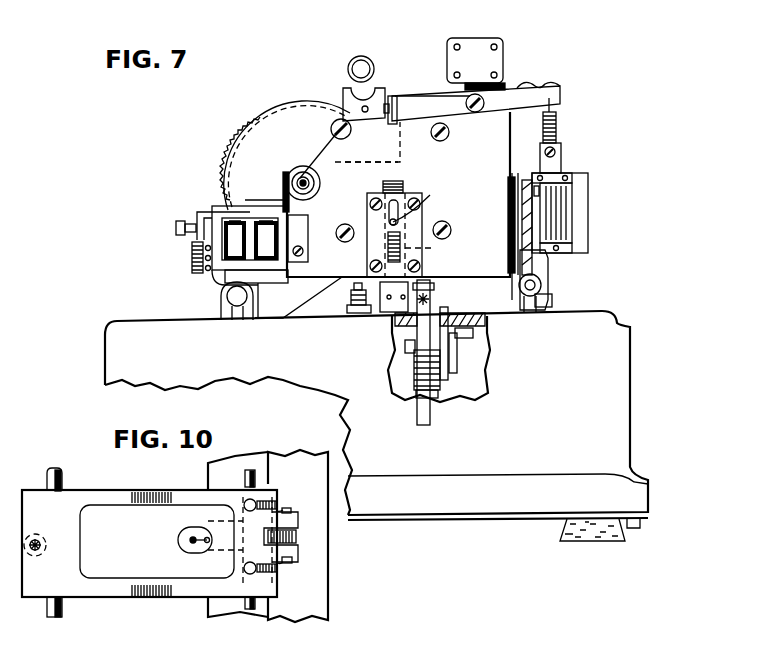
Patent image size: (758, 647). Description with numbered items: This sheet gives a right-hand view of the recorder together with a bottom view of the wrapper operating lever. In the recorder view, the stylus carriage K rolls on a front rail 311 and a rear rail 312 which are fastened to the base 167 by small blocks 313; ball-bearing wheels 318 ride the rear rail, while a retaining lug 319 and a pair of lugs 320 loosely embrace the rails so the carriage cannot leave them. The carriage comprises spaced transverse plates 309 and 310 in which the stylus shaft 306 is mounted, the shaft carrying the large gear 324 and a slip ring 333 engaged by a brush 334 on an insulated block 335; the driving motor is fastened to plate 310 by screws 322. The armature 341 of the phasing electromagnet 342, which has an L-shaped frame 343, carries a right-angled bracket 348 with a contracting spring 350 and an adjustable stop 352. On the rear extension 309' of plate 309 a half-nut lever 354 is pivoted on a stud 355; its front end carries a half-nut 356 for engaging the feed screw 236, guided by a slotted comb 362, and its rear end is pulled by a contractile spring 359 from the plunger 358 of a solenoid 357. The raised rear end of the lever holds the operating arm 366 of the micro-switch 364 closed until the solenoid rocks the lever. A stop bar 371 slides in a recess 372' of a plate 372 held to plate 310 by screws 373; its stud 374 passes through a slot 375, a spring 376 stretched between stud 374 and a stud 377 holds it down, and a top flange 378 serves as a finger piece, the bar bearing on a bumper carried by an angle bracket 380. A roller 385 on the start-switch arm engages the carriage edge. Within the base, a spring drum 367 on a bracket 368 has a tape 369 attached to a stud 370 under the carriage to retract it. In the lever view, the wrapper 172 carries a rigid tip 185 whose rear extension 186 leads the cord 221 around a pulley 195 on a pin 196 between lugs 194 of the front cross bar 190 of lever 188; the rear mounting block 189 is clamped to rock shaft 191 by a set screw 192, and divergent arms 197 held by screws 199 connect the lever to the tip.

In FIG. 7, the base 167 is at (615, 417).
In FIG. 7, the transverse carriage plate 310 is at (502, 163).
In FIG. 7, the half-nut lever 354 is at (425, 108).
In FIG. 7, the rear extension of carriage plate 309' is at (432, 83).
In FIG. 7, the comb 362 is at (389, 122).
In FIG. 7, the half-nut 356 is at (345, 98).
In FIG. 7, the feed screw 236 is at (354, 64).
In FIG. 7, the switch 364 is at (473, 45).
In FIG. 7, the switch operating arm 366 is at (522, 86).
In FIG. 7, the stud 355 is at (474, 113).
In FIG. 7, the screws 322 is at (331, 130).
In FIG. 7, the contractile spring 359 is at (557, 131).
In FIG. 7, the solenoid plunger 358 is at (556, 161).
In FIG. 7, the solenoid 357 is at (580, 201).
In FIG. 7, the ball-bearing wheels 318 is at (543, 252).
In FIG. 7, the rear rail 312 is at (533, 285).
In FIG. 7, the retaining lugs 320 is at (553, 301).
In FIG. 7, the blocks 313 is at (533, 310).
In FIG. 7, the large gear 324 is at (297, 118).
In FIG. 7, the slip ring 333 is at (297, 167).
In FIG. 7, the stylus shaft 306 is at (312, 188).
In FIG. 7, the transverse carriage plate 309 is at (366, 174).
In FIG. 7, the brush 334 is at (284, 186).
In FIG. 7, the insulated block 335 is at (296, 232).
In FIG. 7, the armature 341 is at (255, 210).
In FIG. 7, the electromagnet 342 is at (263, 255).
In FIG. 7, the right-angled bracket 348 is at (210, 210).
In FIG. 7, the adjustable stop 352 is at (178, 228).
In FIG. 7, the magnet frame 343 is at (192, 257).
In FIG. 7, the contracting coil spring 350 is at (224, 281).
In FIG. 7, the front rail 311 is at (232, 294).
In FIG. 7, the retaining lug 319 is at (265, 312).
In FIG. 7, the plate 372 is at (429, 235).
In FIG. 7, the recess 372' is at (440, 254).
In FIG. 7, the stud 374 is at (392, 221).
In FIG. 7, the stop bar 371 is at (399, 197).
In FIG. 7, the slot 375 is at (430, 195).
In FIG. 7, the lateral flange 378 is at (400, 183).
In FIG. 7, the contractile spring 376 is at (388, 248).
In FIG. 7, the stud 377 is at (378, 267).
In FIG. 7, the screws 373 is at (420, 266).
In FIG. 7, the stylus carriage K is at (478, 186).
In FIG. 7, the roller 385 is at (350, 298).
In FIG. 7, the angle bracket 380 is at (390, 303).
In FIG. 7, the stud 370 is at (434, 290).
In FIG. 7, the spring drum 367 is at (414, 373).
In FIG. 7, the bracket 368 is at (448, 385).
In FIG. 7, the flexible band or tape 369 is at (428, 393).
In FIG. 10, the lever 188 is at (139, 598).
In FIG. 10, the rear mounting block 189 is at (68, 535).
In FIG. 10, the set screw 192 is at (37, 556).
In FIG. 10, the rock shaft 191 is at (80, 471).
In FIG. 10, the rear extension 186 is at (178, 541).
In FIG. 10, the cord 221 is at (197, 546).
In FIG. 10, the front cross bar 190 is at (242, 517).
In FIG. 10, the divergent arms 197 is at (243, 475).
In FIG. 10, the wrapper 172 is at (212, 600).
In FIG. 10, the wrapper tip 185 is at (328, 590).
In FIG. 10, the spaced lugs 194 is at (300, 548).
In FIG. 10, the pin 196 is at (297, 503).
In FIG. 10, the pulley 195 is at (290, 563).
In FIG. 10, the screws 199 is at (278, 508).